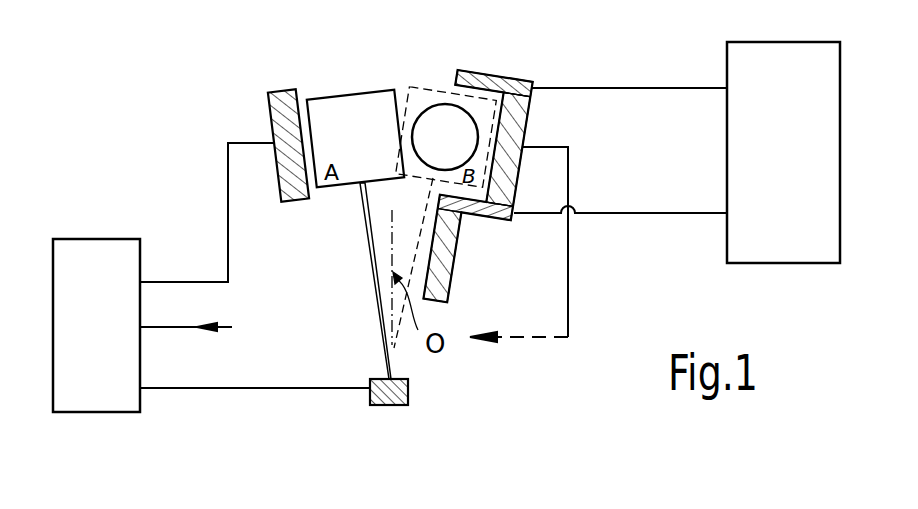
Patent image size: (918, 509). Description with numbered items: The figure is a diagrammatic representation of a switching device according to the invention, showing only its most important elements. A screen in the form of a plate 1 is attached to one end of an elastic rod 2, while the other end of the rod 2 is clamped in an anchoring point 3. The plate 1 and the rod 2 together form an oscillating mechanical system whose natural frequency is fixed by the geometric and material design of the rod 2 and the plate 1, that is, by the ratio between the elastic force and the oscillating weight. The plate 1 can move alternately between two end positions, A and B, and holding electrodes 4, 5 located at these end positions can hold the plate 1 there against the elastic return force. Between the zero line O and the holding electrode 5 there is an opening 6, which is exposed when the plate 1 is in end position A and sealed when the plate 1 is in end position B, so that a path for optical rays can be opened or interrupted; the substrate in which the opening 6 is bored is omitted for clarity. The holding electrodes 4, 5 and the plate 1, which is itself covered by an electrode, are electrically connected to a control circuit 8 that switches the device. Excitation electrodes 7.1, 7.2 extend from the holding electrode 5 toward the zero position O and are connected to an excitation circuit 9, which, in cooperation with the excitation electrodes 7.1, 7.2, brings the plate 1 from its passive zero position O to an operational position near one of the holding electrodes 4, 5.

The plate 1 is at (330, 89).
The elastic rod 2 is at (364, 245).
The anchoring point 3 is at (410, 393).
The holding electrode 4 is at (281, 90).
The holding electrode 5 is at (534, 115).
The opening 6 is at (446, 128).
The excitation electrode 7.1 is at (500, 70).
The excitation electrode 7.2 is at (480, 220).
The control circuit 8 is at (99, 239).
The excitation circuit 9 is at (797, 42).